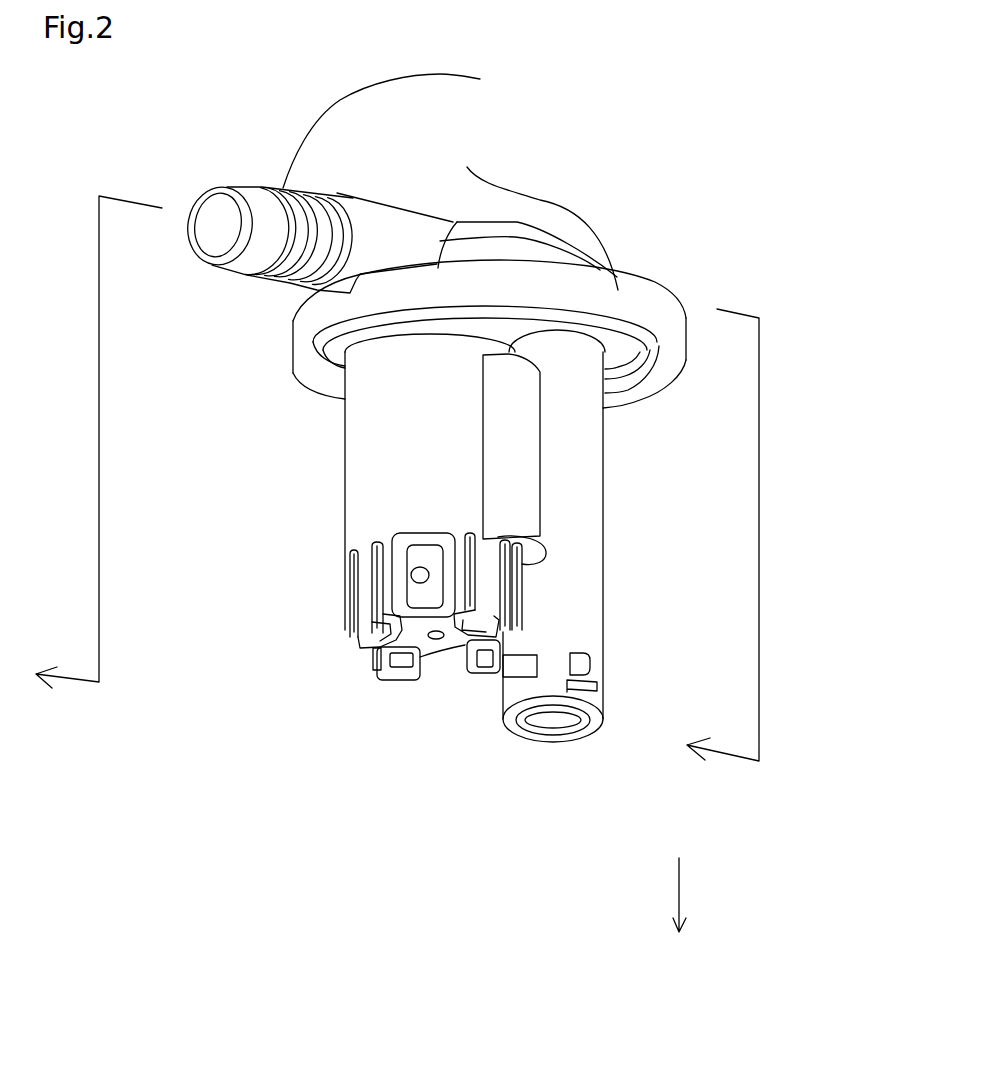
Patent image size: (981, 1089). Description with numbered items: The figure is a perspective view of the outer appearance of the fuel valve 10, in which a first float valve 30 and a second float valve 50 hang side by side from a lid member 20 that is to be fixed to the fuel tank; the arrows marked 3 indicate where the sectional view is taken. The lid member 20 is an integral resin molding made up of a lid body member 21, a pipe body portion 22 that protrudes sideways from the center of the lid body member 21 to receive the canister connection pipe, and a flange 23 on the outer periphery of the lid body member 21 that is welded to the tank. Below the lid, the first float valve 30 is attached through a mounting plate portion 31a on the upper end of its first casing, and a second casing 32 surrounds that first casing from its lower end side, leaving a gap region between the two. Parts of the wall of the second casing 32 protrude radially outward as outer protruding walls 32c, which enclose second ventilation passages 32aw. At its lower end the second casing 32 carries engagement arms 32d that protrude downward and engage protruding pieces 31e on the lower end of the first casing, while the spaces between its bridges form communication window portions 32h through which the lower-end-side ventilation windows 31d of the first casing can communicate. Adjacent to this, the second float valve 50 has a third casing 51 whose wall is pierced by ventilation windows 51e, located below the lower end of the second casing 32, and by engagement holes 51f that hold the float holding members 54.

The fuel valve 10 is at (770, 143).
The section line 3 is at (397, 478).
The lid member 20 is at (527, 63).
The lid body member 21 is at (377, 213).
The pipe body portion 22 is at (480, 79).
The flange 23 is at (467, 167).
The first float valve 30 is at (259, 439).
The mounting plate portion 31a is at (333, 357).
The second casing 32 is at (358, 478).
The outer protruding walls 32c is at (513, 490).
The second ventilation passages 32aw is at (533, 557).
The communication window portions 32h is at (420, 592).
The lower-end-side ventilation windows 31d is at (416, 567).
The engagement arms 32d is at (363, 617).
The protruding pieces 31e is at (377, 770).
The second float valve 50 is at (682, 459).
The third casing 51 is at (583, 427).
The float holding members 54 is at (600, 713).
The ventilation windows 51e is at (537, 660).
The engagement holes 51f is at (560, 687).